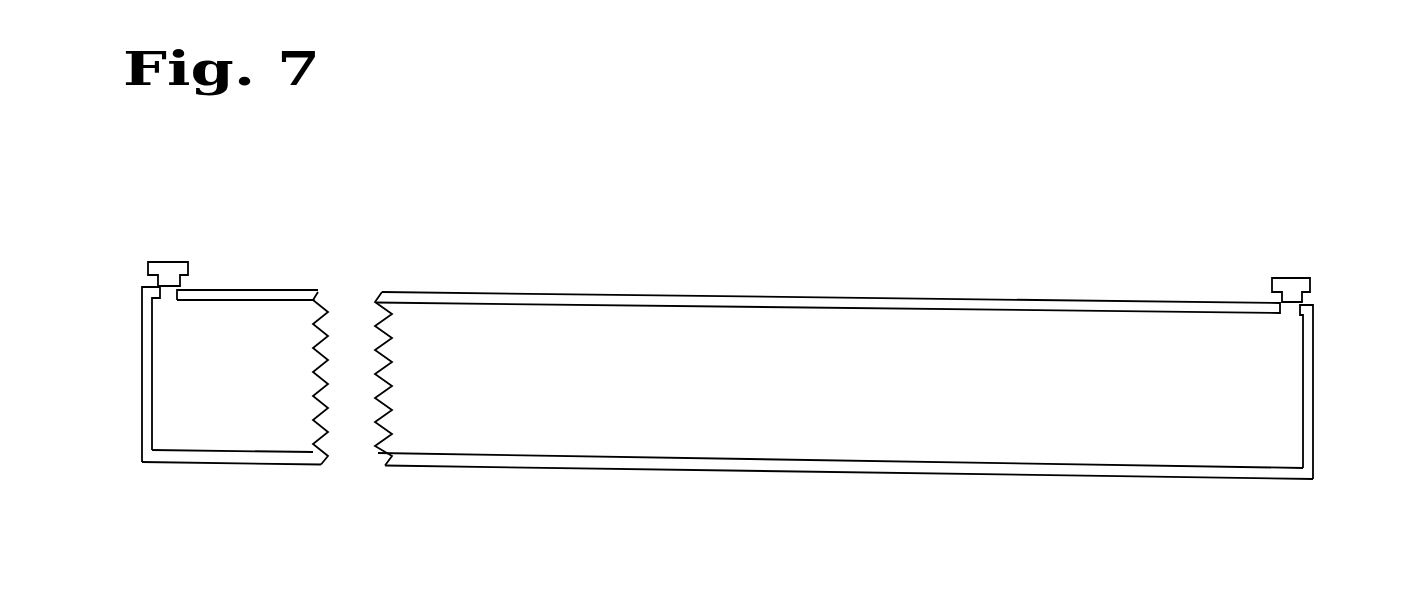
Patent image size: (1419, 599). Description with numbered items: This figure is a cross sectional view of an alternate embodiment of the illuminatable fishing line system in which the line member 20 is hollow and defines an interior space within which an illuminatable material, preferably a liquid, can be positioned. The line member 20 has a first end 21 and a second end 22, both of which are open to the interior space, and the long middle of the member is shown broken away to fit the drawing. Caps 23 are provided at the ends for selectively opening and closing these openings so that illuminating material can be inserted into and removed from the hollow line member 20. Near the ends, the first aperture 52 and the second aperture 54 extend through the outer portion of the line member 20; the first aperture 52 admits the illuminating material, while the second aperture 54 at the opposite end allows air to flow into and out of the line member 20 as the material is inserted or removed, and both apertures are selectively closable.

The line member 20 is at (988, 475).
The first end 21 is at (1315, 400).
The second end 22 is at (142, 373).
The caps 23 is at (164, 261).
The first aperture 52 is at (1274, 299).
The second aperture 54 is at (183, 284).